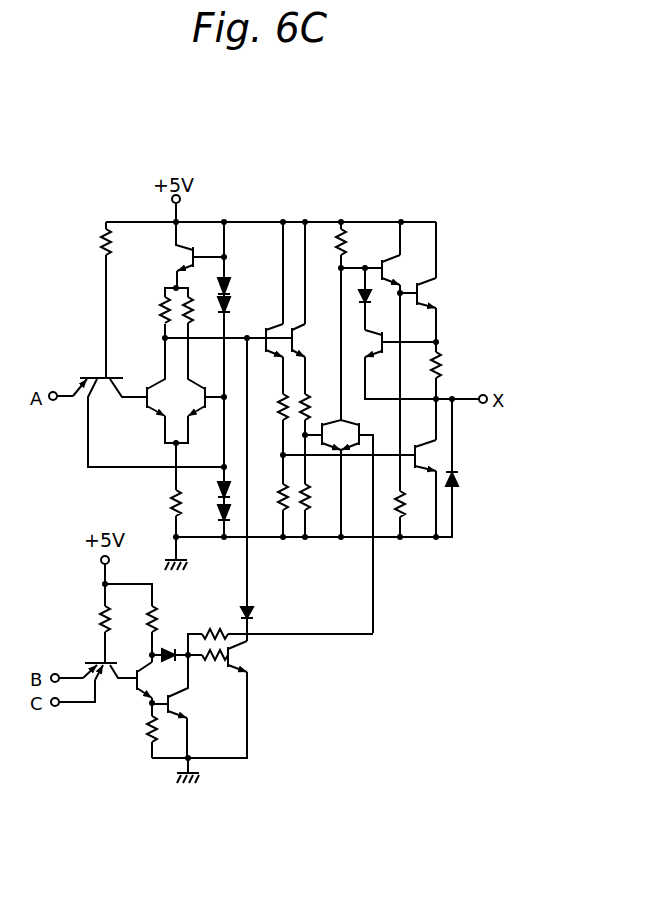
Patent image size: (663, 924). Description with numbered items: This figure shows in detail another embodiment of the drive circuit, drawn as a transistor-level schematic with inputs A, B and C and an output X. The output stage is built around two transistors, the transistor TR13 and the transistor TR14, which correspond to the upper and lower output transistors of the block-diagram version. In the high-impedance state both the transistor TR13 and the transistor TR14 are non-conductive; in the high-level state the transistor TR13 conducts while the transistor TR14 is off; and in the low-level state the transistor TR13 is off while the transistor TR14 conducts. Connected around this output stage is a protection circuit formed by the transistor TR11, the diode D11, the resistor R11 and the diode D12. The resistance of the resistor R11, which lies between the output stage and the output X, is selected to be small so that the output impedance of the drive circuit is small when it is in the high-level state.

The transistor TR11 is at (400, 364).
The transistor TR13 is at (459, 282).
The transistor TR14 is at (419, 468).
The resistor R11 is at (454, 370).
The diode D11 is at (380, 299).
The diode D12 is at (468, 468).